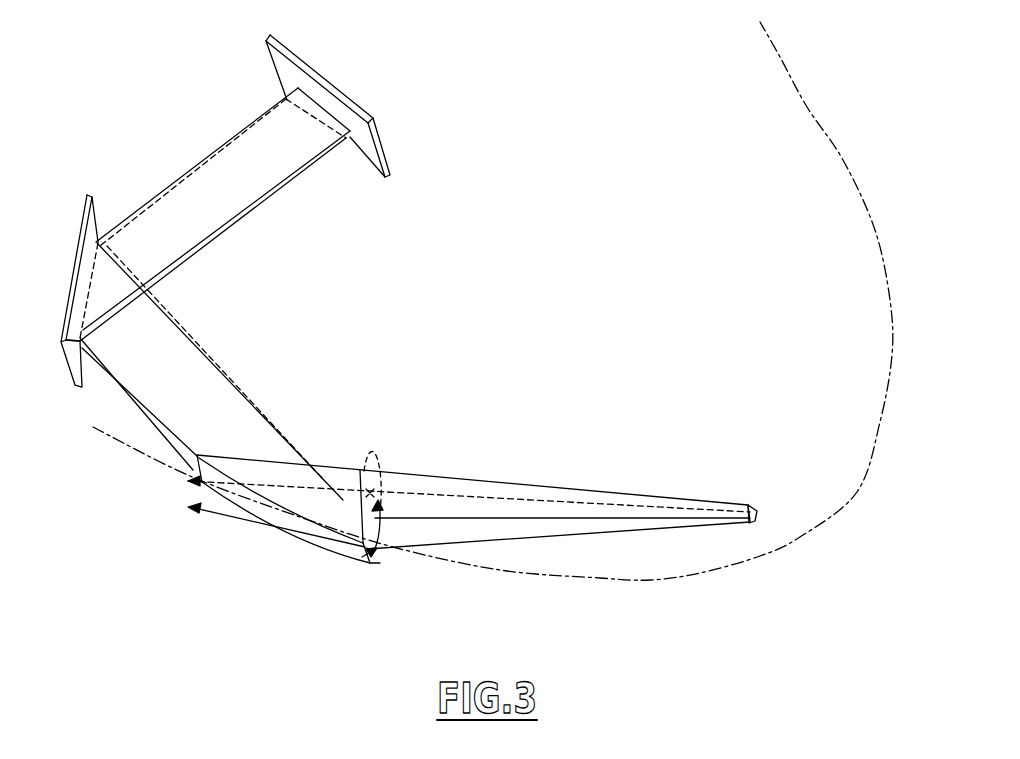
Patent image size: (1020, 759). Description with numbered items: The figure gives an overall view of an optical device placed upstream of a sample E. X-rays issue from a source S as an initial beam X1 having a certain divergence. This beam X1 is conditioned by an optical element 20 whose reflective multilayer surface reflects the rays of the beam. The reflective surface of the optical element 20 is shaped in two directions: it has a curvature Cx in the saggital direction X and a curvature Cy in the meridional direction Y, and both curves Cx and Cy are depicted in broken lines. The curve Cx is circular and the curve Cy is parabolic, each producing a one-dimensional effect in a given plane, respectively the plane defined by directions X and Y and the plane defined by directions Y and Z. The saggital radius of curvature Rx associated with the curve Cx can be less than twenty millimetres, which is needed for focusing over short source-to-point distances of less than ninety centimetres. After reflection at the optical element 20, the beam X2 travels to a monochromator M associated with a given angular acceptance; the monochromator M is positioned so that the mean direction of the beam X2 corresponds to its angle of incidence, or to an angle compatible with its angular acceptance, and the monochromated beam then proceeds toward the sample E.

The sample E is at (338, 84).
The monochromator M is at (66, 301).
The beam X2 is at (144, 412).
The optical element 20 is at (311, 521).
The initial X-ray beam X1 is at (556, 534).
The source S is at (763, 503).
The curvature in the saggital direction Cx is at (368, 497).
The saggital radius of curvature Rx is at (376, 505).
The curvature in the meridional direction Cy is at (677, 573).
The saggital direction X is at (182, 480).
The meridional direction Y is at (265, 522).
The direction Z is at (379, 561).